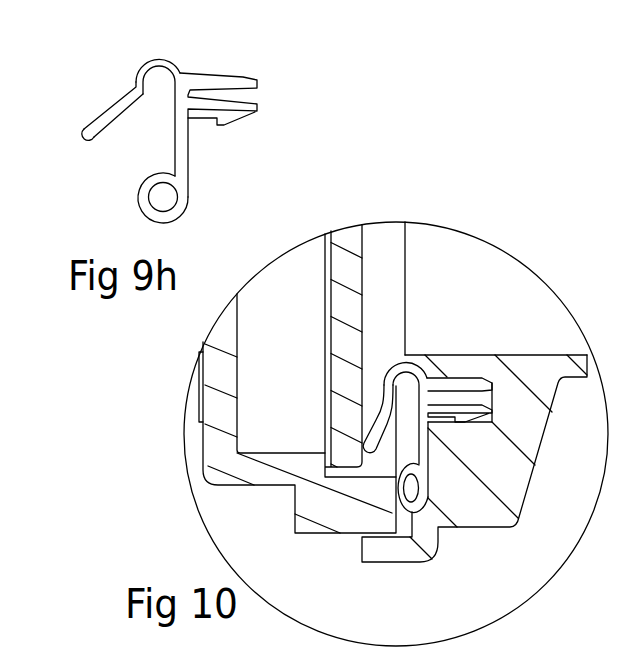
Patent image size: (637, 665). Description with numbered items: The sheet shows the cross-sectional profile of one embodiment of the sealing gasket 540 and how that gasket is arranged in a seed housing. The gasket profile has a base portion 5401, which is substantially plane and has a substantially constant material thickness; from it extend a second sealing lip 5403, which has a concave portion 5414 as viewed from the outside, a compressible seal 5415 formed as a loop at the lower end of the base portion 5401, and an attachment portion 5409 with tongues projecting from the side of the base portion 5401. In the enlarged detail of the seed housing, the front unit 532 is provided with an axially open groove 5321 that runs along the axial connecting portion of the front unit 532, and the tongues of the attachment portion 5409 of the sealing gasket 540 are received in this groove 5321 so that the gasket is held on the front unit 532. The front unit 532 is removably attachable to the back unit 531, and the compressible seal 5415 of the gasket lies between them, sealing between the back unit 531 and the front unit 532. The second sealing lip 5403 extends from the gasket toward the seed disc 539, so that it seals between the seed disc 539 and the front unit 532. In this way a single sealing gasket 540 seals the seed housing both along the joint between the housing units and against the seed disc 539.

In FIG. 9h, the base portion 5401 is at (183, 145).
In FIG. 9h, the second sealing lip 5403 is at (75, 130).
In FIG. 9h, the concave portion 5414 is at (117, 102).
In FIG. 9h, the attachment portion 5409 is at (243, 115).
In FIG. 9h, the compressible seal 5415 is at (138, 213).
In FIG. 10, the seed disc 539 is at (348, 340).
In FIG. 10, the sealing gasket 540 is at (428, 358).
In FIG. 10, the axially open groove 5321 is at (485, 377).
In FIG. 10, the front unit 532 is at (483, 460).
In FIG. 10, the back unit 531 is at (300, 494).